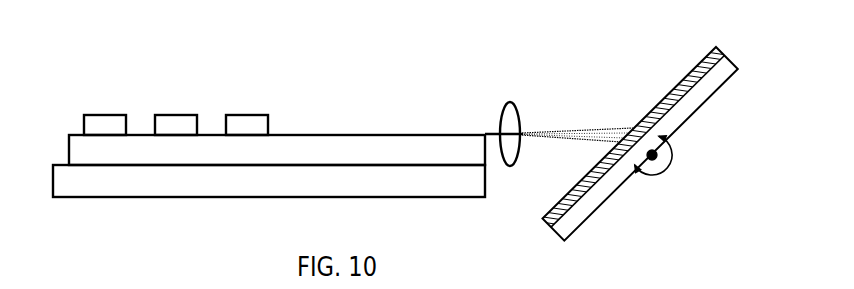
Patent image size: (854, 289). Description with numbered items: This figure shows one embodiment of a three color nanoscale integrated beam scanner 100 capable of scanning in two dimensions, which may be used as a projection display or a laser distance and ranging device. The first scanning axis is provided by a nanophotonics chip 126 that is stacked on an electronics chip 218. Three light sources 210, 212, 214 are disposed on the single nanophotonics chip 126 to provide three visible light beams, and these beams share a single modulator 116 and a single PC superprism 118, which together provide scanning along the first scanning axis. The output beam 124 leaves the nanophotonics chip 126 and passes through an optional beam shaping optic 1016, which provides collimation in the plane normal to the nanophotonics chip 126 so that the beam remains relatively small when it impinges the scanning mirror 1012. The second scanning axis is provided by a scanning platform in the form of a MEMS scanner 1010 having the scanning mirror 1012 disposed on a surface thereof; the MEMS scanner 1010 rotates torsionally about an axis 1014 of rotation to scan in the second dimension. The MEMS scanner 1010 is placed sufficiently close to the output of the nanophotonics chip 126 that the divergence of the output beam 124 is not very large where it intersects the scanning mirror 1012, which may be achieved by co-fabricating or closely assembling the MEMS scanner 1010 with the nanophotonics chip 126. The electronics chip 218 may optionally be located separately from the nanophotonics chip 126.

The beam scanner 100 is at (121, 28).
The nanophotonics chip 126 is at (69, 150).
The electronics chip 218 is at (53, 179).
The light source 210 is at (113, 115).
The light source 212 is at (184, 115).
The light source 214 is at (255, 115).
The modulator 116 is at (367, 157).
The PC superprism 118 is at (439, 157).
The beam shaping optic 1016 is at (511, 104).
The output beam 124 is at (562, 132).
The MEMS scanner 1010 is at (712, 98).
The scanning mirror 1012 is at (692, 72).
The axis 1014 is at (662, 159).